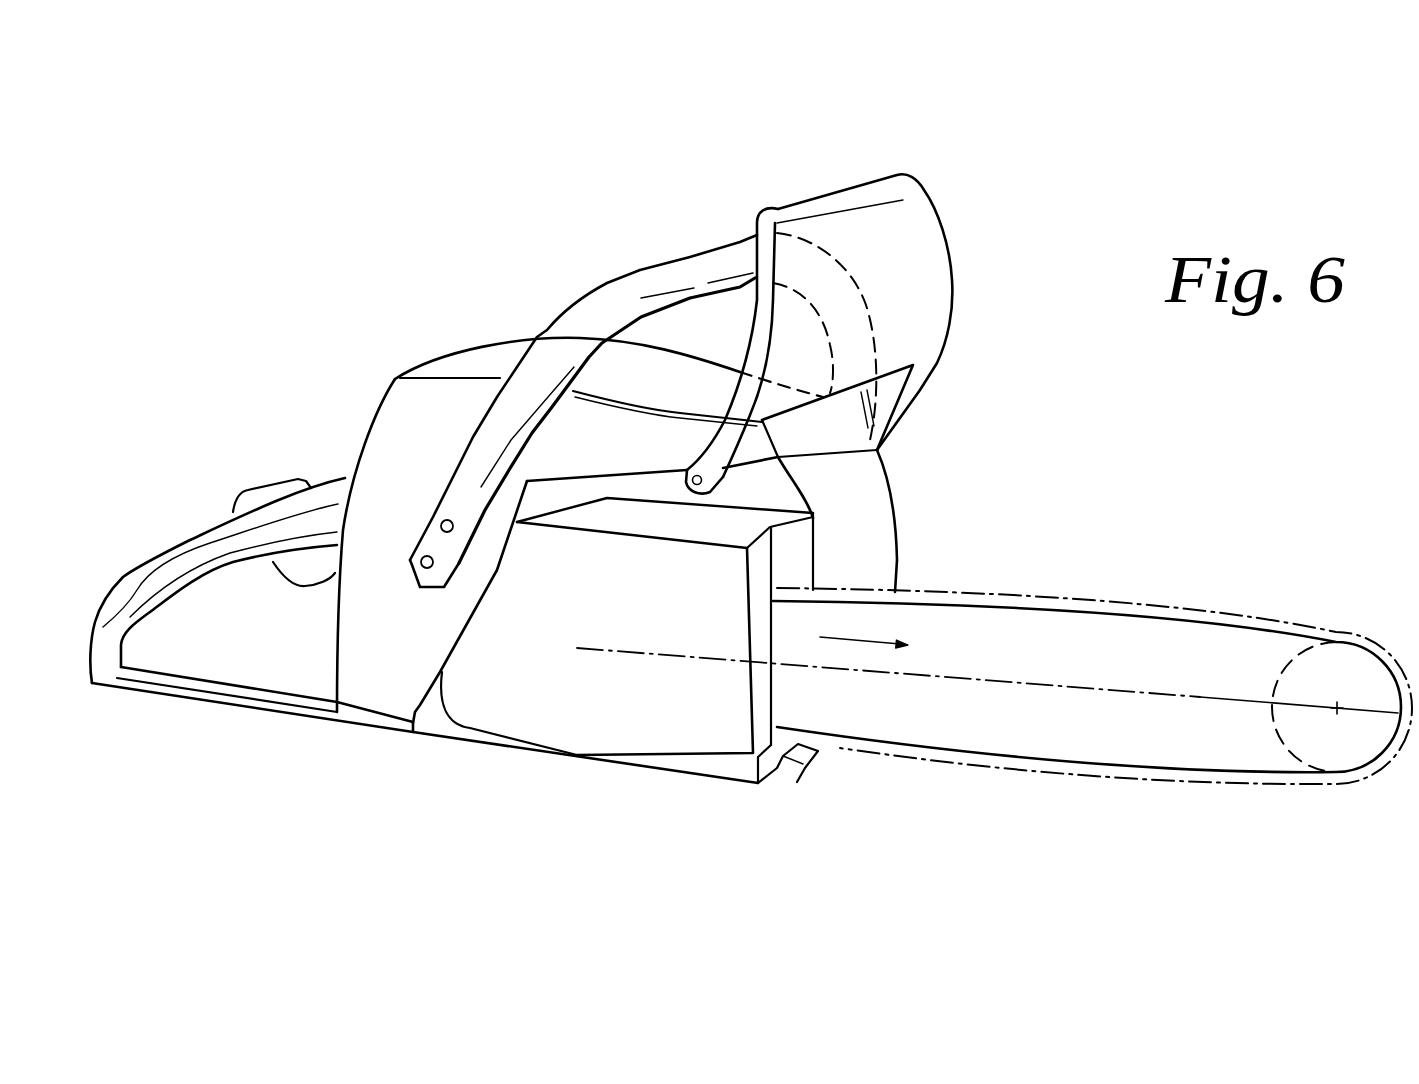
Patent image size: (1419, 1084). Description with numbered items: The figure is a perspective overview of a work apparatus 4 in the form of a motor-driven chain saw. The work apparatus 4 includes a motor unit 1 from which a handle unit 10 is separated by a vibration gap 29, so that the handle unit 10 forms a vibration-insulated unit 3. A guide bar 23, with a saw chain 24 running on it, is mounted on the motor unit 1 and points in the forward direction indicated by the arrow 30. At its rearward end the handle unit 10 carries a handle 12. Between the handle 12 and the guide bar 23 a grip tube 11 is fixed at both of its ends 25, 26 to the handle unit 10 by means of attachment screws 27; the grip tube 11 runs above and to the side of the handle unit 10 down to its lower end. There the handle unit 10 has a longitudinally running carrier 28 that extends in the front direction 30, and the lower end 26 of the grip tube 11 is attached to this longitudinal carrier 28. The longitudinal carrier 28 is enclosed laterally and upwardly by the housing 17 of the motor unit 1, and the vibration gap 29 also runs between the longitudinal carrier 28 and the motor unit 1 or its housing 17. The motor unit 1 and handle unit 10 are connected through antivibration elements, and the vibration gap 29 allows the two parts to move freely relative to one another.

The motor unit 1 is at (840, 531).
The vibration-insulated unit 3 is at (250, 728).
The work apparatus 4 is at (366, 258).
The handle unit 10 is at (365, 606).
The grip tube 11 is at (637, 283).
The handle 12 is at (170, 562).
The housing 17 is at (987, 624).
The guide bar 23 is at (1033, 653).
The saw chain 24 is at (1135, 610).
The end of grip tube 25 is at (419, 527).
The lower end of grip tube 26 is at (925, 530).
The attachment screws 27 is at (447, 533).
The longitudinal carrier 28 is at (802, 758).
The vibration gap 29 is at (427, 727).
The arrow indicating forward direction 30 is at (862, 648).